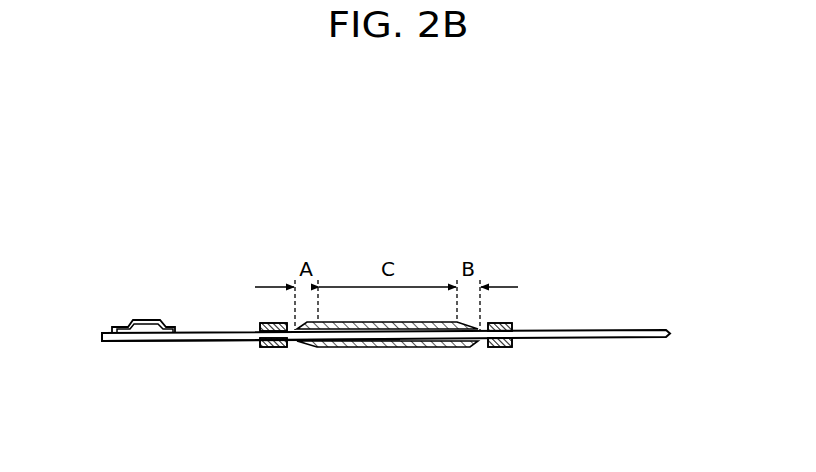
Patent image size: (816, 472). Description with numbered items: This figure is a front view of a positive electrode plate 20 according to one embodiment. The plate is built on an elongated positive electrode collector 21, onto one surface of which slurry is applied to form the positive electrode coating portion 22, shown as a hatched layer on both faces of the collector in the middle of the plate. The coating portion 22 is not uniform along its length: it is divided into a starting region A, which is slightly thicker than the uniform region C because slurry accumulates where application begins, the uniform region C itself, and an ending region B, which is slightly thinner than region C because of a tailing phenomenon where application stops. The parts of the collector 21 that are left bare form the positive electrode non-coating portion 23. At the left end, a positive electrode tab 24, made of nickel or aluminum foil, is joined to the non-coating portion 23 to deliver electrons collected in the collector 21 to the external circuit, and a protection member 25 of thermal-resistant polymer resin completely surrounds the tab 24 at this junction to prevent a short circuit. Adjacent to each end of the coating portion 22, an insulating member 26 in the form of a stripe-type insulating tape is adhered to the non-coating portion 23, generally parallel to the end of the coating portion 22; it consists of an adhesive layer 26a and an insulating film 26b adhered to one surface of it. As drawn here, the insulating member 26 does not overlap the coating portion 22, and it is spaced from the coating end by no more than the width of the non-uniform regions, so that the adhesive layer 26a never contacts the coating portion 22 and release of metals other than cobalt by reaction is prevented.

The positive electrode plate 20 is at (550, 185).
The positive electrode collector 21 is at (672, 333).
The positive electrode coating portion 22 is at (407, 348).
The positive electrode non-coating portion 23 is at (197, 342).
The positive electrode tab 24 is at (147, 326).
The protection member 25 is at (126, 325).
The insulating member 26 is at (227, 232).
The adhesive layer 26a is at (258, 324).
The insulating film 26b is at (268, 323).